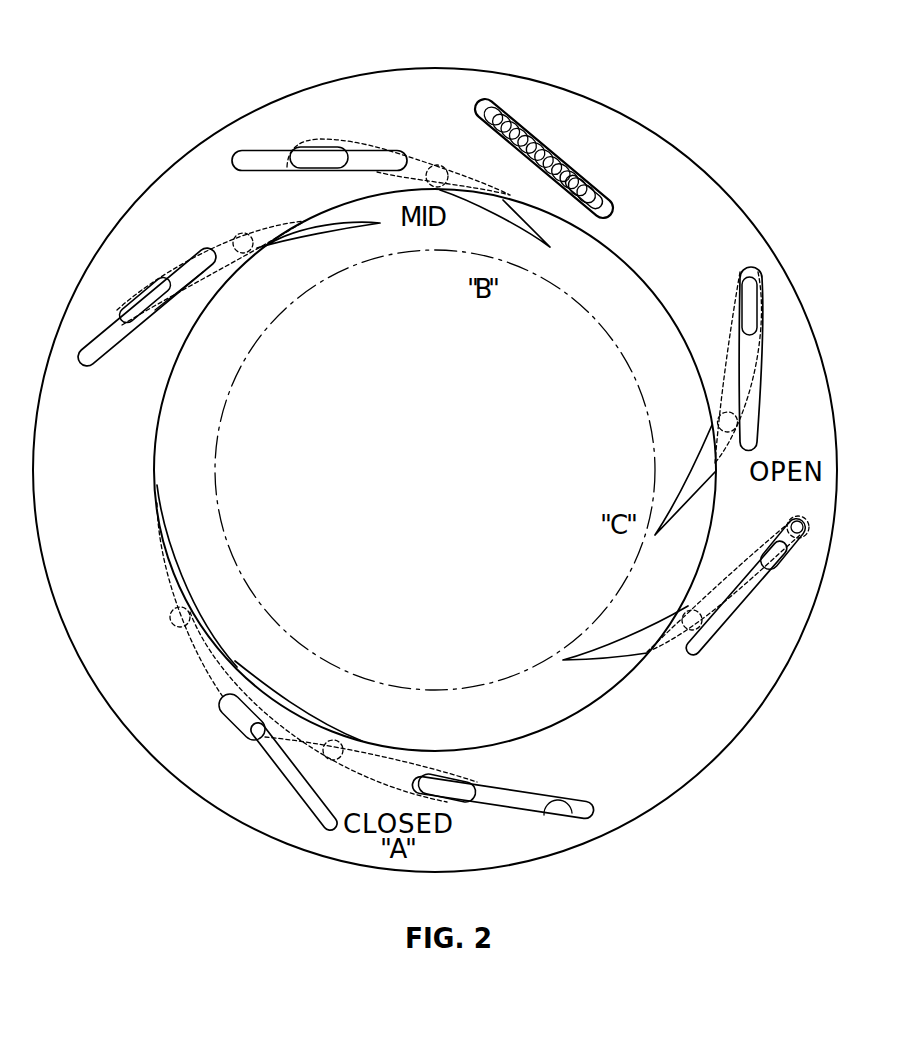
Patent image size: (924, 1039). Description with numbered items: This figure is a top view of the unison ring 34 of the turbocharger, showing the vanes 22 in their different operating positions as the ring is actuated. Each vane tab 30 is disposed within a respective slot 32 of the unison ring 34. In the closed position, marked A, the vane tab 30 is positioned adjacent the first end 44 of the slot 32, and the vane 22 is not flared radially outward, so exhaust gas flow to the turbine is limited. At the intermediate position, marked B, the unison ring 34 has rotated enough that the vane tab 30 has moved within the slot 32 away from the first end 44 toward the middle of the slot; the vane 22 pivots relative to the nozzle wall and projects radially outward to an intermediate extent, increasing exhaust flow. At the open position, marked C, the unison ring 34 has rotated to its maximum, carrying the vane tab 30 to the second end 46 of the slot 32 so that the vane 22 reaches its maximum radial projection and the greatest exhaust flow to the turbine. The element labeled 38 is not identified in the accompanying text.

The vane 22 is at (550, 247).
The vane tab 30 is at (320, 153).
The slot 32 is at (270, 170).
The unison ring 34 is at (787, 345).
The inner ring 38 is at (710, 640).
The first end of the slot 44 is at (380, 162).
The second end of the slot 46 is at (805, 531).